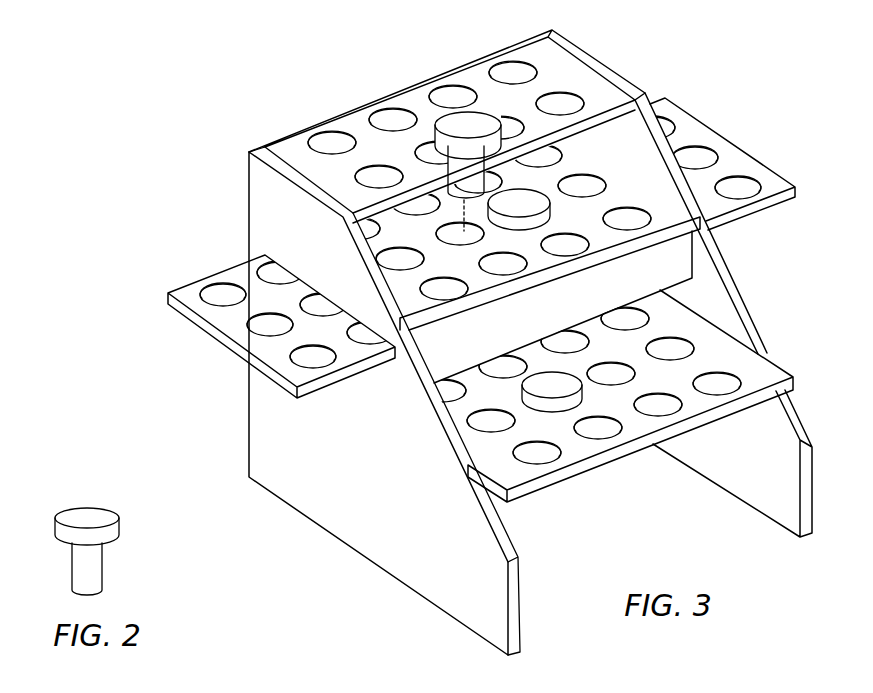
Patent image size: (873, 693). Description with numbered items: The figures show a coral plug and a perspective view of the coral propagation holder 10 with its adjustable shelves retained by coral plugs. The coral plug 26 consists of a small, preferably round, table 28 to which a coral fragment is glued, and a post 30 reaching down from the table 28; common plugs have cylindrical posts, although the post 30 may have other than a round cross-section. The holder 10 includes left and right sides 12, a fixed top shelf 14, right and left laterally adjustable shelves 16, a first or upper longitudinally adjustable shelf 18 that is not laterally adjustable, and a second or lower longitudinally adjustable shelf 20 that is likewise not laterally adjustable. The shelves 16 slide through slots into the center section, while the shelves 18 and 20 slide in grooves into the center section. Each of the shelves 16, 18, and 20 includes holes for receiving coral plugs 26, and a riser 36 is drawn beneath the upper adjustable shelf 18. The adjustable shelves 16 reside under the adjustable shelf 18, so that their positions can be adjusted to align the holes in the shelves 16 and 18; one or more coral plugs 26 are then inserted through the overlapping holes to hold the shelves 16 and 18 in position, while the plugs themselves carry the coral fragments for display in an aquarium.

In FIG. 3, the coral propagation holder 10 is at (188, 128).
In FIG. 3, the left and right sides 12 is at (530, 374).
In FIG. 3, the fixed top shelf 14 is at (447, 126).
In FIG. 3, the laterally adjustable shelves 16 is at (250, 284).
In FIG. 3, the first longitudinally adjustable shelf 18 is at (516, 237).
In FIG. 3, the second longitudinally adjustable shelf 20 is at (605, 396).
In FIG. 3, the coral plug 26 is at (508, 262).
In FIG. 2, the coral plug 26 is at (101, 500).
In FIG. 2, the table 28 is at (97, 518).
In FIG. 2, the post 30 is at (92, 570).
In FIG. 3, the riser panel 36 is at (563, 307).